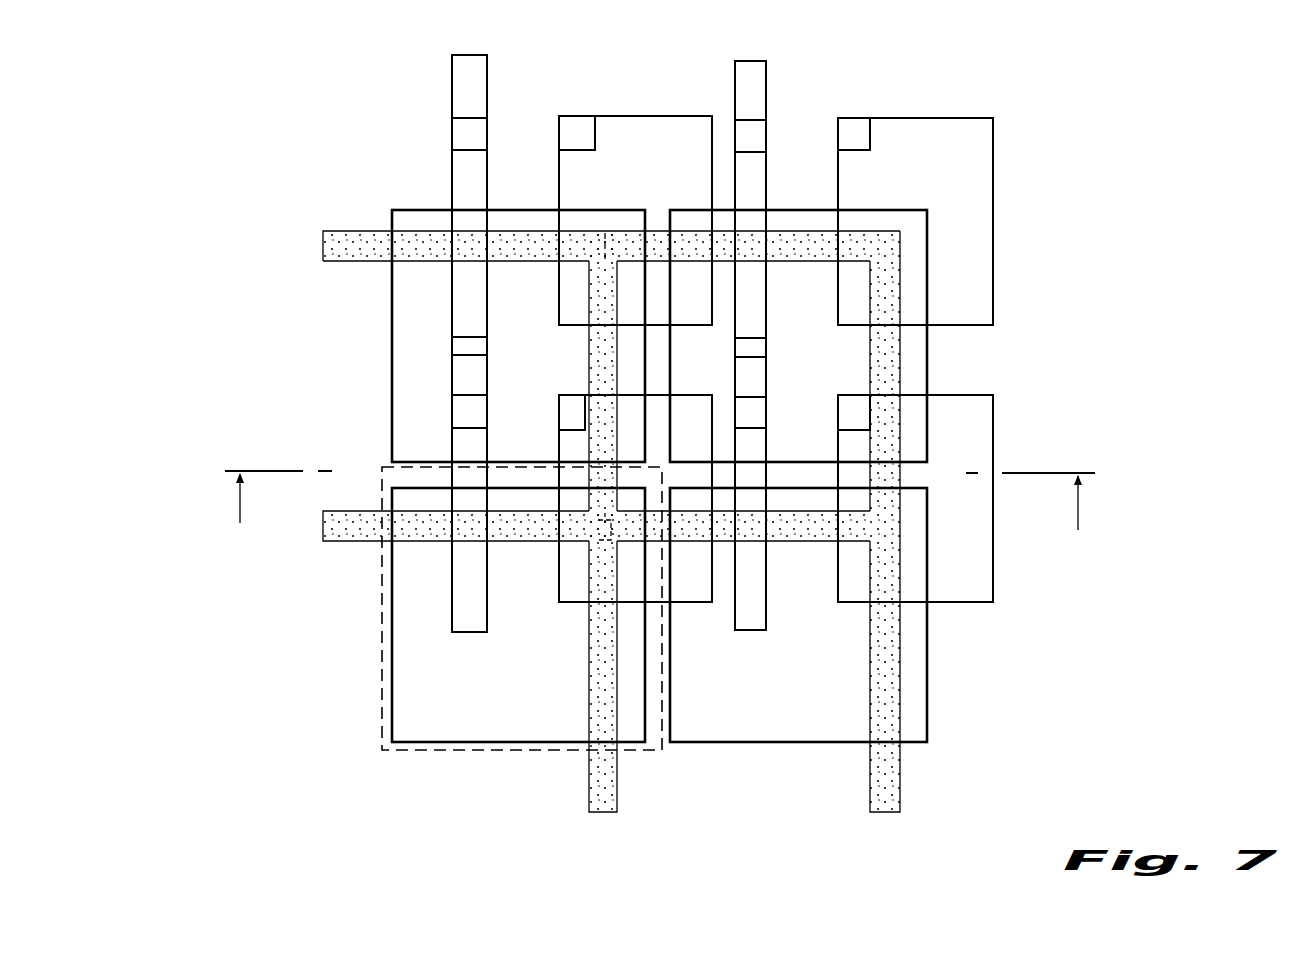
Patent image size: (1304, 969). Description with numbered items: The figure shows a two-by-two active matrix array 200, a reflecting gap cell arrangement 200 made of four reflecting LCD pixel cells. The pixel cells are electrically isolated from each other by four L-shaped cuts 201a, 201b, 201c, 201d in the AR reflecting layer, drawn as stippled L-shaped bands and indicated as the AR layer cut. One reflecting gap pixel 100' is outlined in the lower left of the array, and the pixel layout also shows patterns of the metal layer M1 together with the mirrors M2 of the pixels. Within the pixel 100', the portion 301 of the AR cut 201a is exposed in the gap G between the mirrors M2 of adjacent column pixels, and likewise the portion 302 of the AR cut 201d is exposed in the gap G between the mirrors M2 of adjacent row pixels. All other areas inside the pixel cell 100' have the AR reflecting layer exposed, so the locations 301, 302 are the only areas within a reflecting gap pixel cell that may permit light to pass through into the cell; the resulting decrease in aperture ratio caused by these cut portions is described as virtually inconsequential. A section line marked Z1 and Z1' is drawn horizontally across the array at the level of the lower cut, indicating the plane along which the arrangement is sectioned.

The active matrix array 200 is at (1015, 76).
The L-shaped AR layer cut 201a is at (357, 245).
The L-shaped AR layer cut 201b is at (893, 360).
The L-shaped AR layer cut 201c is at (608, 787).
The L-shaped AR layer cut 201d is at (893, 666).
The portion of AR cut 301 is at (601, 478).
The portion of AR cut 302 is at (650, 525).
The reflecting gap pixel 100' is at (468, 608).
The M1 metal layer M1 is at (456, 81).
The mirror M2 is at (432, 722).
The AR reflecting layer AR is at (323, 247).
The gap G is at (378, 465).
The section line Z1 is at (260, 499).
The section line Z1' is at (1056, 501).